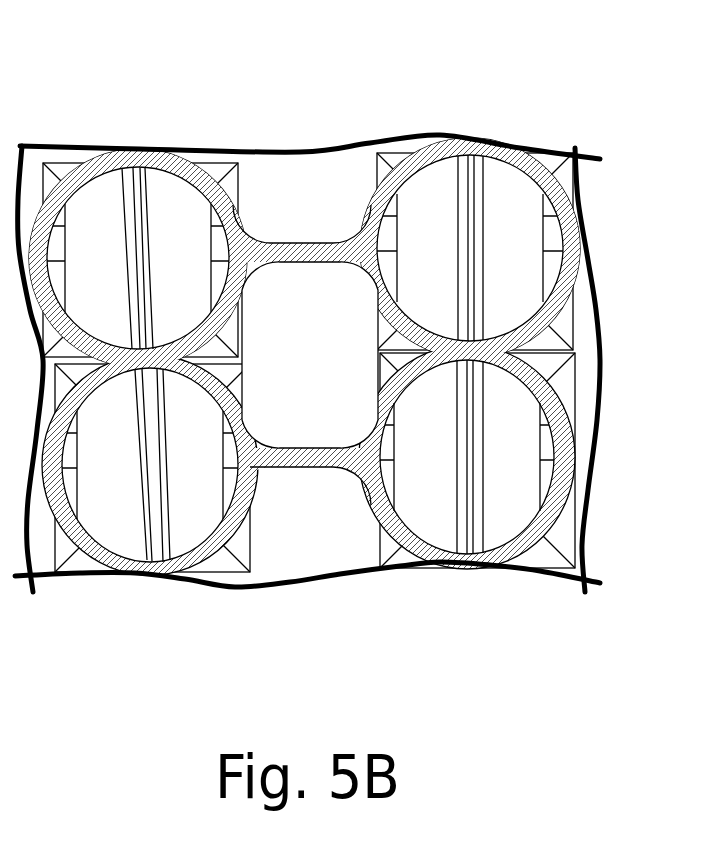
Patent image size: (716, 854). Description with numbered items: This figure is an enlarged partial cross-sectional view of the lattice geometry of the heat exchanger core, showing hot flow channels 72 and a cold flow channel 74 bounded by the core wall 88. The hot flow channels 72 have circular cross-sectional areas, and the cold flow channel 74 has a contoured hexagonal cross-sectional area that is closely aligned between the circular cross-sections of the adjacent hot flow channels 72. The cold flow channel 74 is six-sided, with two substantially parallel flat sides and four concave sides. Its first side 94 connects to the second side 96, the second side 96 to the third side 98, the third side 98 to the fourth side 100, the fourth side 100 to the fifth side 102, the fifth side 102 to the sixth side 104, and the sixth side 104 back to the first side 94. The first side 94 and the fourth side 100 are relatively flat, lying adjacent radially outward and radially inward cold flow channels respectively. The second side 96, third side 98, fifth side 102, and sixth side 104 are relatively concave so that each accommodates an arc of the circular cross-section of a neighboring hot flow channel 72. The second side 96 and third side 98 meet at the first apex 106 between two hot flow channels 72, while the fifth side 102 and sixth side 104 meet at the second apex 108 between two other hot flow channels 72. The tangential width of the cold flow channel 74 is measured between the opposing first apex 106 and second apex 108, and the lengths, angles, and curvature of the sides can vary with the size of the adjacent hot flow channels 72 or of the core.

The hot flow channel 72 is at (174, 148).
The cold flow channel 74 is at (385, 462).
The core wall 88 is at (573, 468).
The first side 94 is at (317, 260).
The second side 96 is at (393, 305).
The third side 98 is at (397, 407).
The fourth side 100 is at (298, 450).
The fifth side 102 is at (243, 395).
The sixth side 104 is at (224, 300).
The first apex 106 is at (575, 297).
The second apex 108 is at (195, 362).